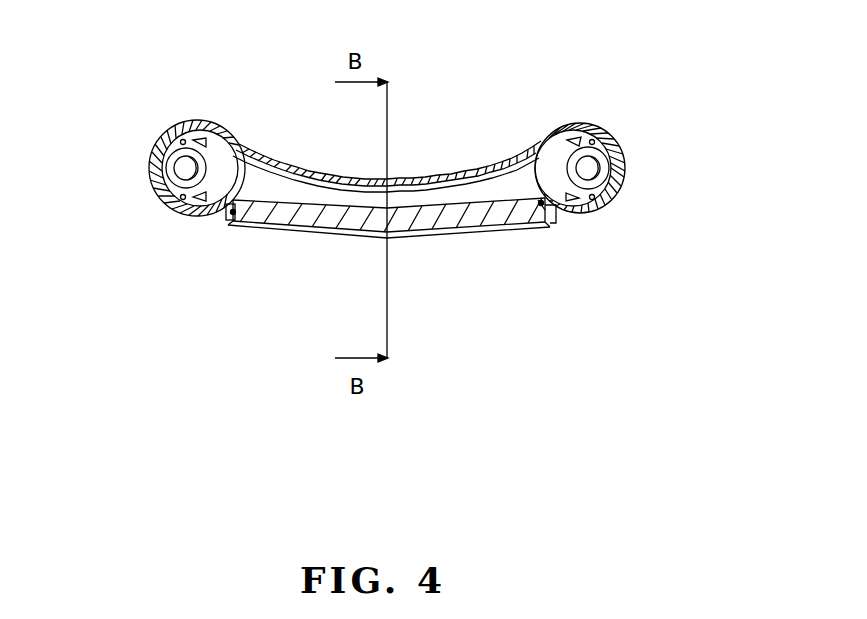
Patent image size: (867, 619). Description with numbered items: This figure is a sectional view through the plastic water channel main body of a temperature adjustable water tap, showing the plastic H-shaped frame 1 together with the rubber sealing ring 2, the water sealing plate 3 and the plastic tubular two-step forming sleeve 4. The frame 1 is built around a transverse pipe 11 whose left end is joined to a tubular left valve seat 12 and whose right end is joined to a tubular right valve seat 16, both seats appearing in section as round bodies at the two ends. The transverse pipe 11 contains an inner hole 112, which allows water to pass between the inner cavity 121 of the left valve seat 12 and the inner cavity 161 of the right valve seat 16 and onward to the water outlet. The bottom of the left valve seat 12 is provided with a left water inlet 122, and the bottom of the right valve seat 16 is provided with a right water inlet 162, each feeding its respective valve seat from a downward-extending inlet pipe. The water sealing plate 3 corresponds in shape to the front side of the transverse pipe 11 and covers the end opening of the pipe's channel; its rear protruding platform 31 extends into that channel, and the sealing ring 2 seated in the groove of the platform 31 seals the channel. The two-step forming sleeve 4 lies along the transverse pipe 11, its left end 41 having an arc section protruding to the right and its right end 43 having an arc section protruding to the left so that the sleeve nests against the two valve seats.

The plastic H-shaped frame 1 is at (164, 120).
The rubber sealing ring 2 is at (224, 218).
The water sealing plate 3 is at (335, 228).
The plastic tubular two-step forming sleeve 4 is at (417, 250).
The transverse pipe 11 is at (418, 182).
The left valve seat 12 is at (150, 173).
The right valve seat 16 is at (622, 185).
The protruding platform 31 is at (553, 210).
The left end of the two-step forming sleeve 41 is at (258, 157).
The right end of the two-step forming sleeve 43 is at (545, 228).
The inner hole 112 is at (470, 193).
The inner cavity of the left valve seat 121 is at (167, 205).
The left water inlet 122 is at (188, 164).
The inner cavity of the right valve seat 161 is at (553, 170).
The right water inlet 162 is at (590, 180).